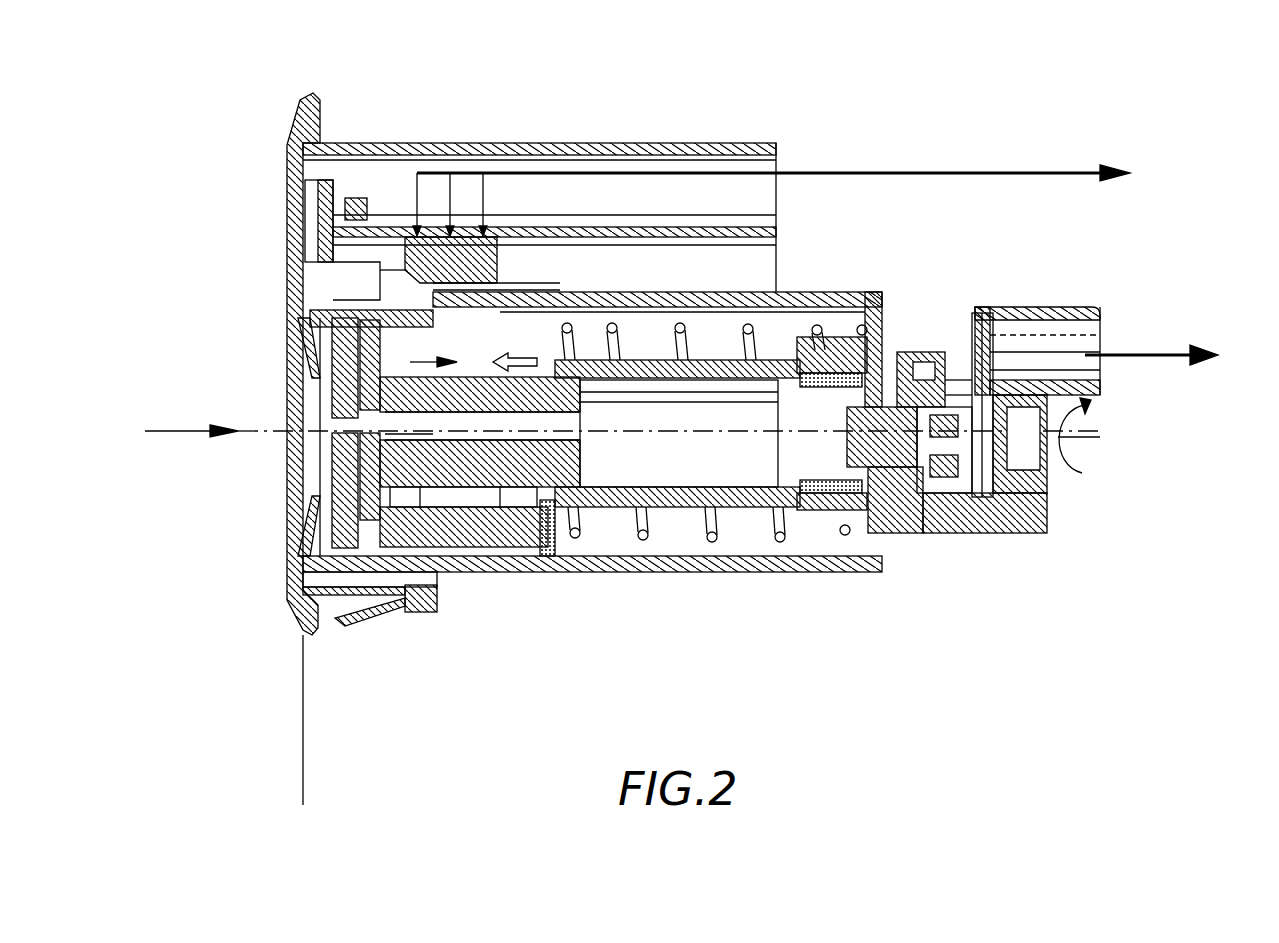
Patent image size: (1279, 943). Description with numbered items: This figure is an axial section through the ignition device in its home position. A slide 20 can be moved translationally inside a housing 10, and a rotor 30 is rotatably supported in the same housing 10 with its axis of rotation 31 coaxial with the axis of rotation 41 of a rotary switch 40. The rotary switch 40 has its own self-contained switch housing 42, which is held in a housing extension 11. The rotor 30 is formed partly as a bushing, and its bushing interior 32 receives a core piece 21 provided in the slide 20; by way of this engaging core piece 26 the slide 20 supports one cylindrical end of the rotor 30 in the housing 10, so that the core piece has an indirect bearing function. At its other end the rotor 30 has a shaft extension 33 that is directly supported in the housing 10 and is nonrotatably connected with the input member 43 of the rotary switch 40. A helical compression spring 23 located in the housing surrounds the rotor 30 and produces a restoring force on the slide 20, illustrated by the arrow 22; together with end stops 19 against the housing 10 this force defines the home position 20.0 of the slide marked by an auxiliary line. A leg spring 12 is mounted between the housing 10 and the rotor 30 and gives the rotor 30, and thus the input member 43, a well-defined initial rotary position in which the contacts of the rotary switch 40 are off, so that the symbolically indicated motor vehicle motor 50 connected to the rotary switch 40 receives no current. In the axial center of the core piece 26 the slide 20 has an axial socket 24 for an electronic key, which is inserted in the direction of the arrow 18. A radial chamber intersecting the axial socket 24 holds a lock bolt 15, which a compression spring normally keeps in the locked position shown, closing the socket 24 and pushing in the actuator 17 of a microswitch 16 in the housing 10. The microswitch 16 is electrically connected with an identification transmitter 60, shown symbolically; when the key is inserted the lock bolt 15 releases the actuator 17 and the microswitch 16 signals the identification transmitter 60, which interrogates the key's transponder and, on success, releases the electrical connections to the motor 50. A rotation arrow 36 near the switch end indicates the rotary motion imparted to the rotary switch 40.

The housing 10 is at (436, 140).
The housing extension 11 is at (937, 533).
The leg spring 12 is at (820, 497).
The lock bolt 15 is at (332, 463).
The microswitch 16 is at (330, 249).
The actuator 17 is at (333, 302).
The arrow 18 is at (158, 431).
The end stops 19 is at (303, 580).
The slide 20 is at (508, 550).
The home position 20.0 is at (303, 781).
The core piece 21 is at (500, 450).
The restoring force 22 is at (538, 356).
The helical compression spring 23 is at (684, 323).
The axial socket 24 is at (433, 436).
The core piece 26 is at (428, 362).
The rotor 30 is at (735, 520).
The axis of rotation 31 is at (677, 437).
The bushing interior 32 is at (606, 462).
The shaft extension 33 is at (888, 407).
The rotation direction 36 is at (1090, 408).
The rotary switch 40 is at (1044, 293).
The axis of rotation 41 is at (1080, 440).
The switch housing 42 is at (941, 352).
The input member 43 is at (900, 470).
The motor vehicle motor 50 is at (1179, 357).
The identification transmitter 60 is at (797, 193).